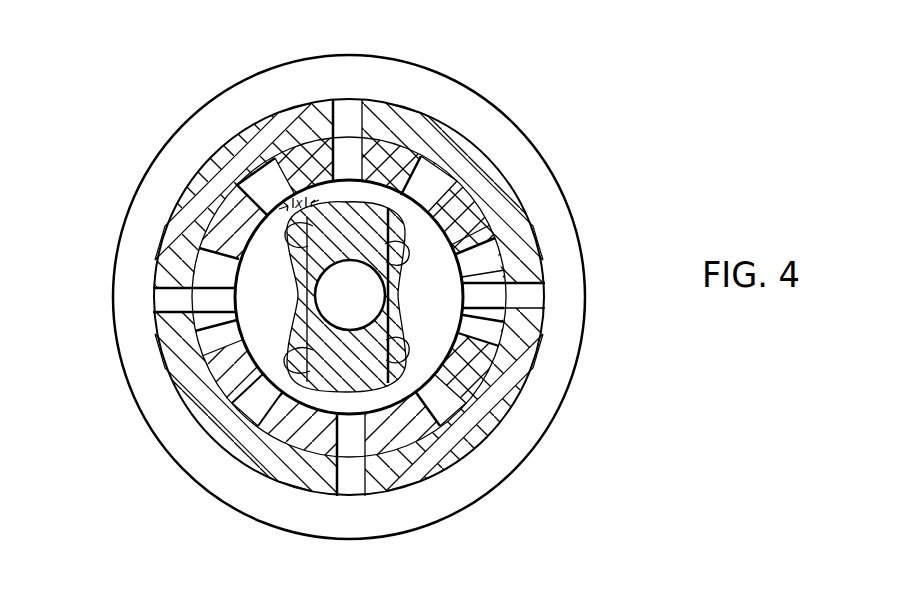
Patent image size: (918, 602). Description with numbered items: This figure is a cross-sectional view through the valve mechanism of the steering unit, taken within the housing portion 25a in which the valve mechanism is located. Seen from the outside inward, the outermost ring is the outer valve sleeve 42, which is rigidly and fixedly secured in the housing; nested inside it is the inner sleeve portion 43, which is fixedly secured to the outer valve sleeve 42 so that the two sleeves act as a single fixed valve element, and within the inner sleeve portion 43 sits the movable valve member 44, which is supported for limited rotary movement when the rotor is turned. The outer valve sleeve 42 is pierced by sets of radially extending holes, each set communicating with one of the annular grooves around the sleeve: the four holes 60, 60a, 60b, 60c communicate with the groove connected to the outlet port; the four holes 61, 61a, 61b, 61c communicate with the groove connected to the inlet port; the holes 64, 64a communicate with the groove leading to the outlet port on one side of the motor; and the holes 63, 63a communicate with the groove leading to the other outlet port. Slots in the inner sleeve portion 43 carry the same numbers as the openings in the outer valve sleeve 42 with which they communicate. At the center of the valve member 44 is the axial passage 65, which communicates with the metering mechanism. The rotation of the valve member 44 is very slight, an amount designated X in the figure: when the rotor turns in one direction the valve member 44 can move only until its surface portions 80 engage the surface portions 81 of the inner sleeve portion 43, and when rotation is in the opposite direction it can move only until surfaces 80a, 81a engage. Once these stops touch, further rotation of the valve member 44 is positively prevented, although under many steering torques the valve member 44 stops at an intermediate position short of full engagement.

The housing portion 25a is at (530, 141).
The outer valve sleeve 42 is at (524, 208).
The inner sleeve portion 43 is at (478, 392).
The valve member 44 is at (443, 158).
The radially extending hole 60 is at (346, 100).
The radially extending hole 60a is at (500, 296).
The radially extending hole 60b is at (352, 498).
The radially extending hole 60c is at (160, 300).
The radially extending hole 61 is at (441, 162).
The radially extending hole 61a is at (436, 413).
The radially extending hole 61b is at (252, 420).
The radially extending hole 61c is at (258, 176).
The radially extending hole 63 is at (484, 259).
The radially extending hole 63a is at (212, 338).
The radially extending hole 64 is at (492, 335).
The radially extending hole 64a is at (208, 266).
The axial passage 65 is at (368, 325).
The surface portion 80 is at (312, 227).
The surface portion 80a is at (392, 248).
The surface portion 81 is at (296, 246).
The surface portion 81a is at (392, 262).